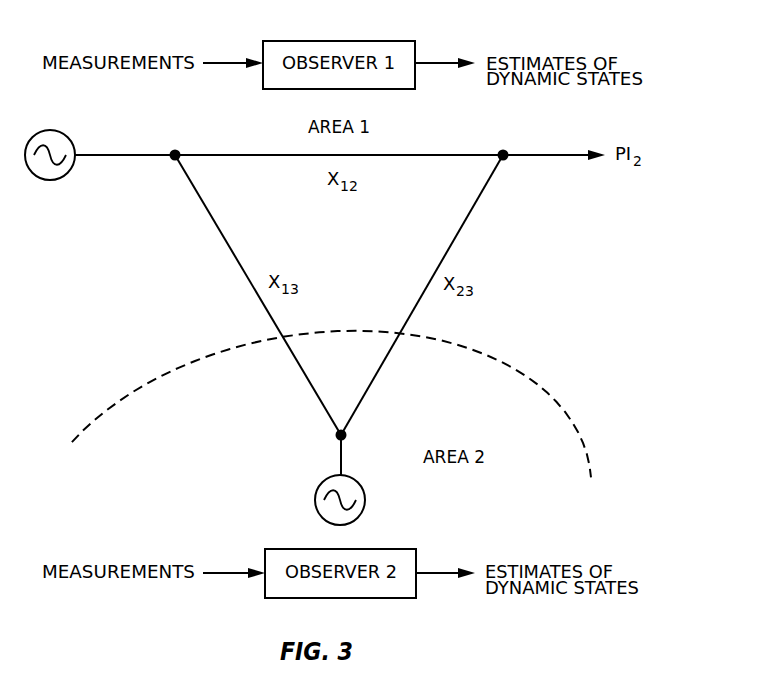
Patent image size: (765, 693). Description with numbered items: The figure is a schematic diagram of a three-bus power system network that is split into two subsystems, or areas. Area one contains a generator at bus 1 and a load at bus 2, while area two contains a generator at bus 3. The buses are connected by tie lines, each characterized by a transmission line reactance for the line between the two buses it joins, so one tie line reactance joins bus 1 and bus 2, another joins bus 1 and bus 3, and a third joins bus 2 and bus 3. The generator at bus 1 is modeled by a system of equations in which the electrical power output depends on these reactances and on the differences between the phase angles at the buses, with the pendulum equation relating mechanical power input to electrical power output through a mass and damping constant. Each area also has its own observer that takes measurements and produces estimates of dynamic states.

The bus 1 is at (177, 144).
The bus 2 is at (504, 144).
The bus 3 is at (333, 435).